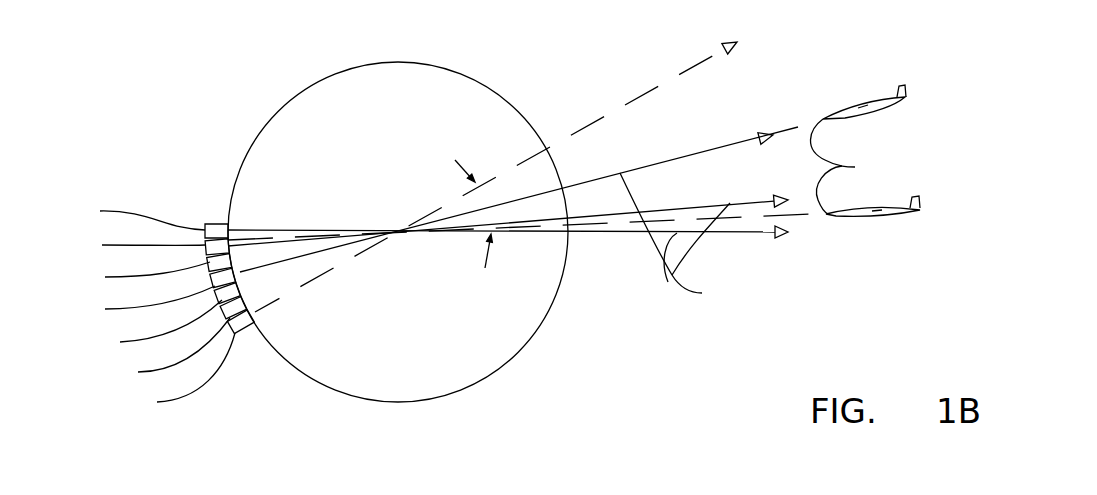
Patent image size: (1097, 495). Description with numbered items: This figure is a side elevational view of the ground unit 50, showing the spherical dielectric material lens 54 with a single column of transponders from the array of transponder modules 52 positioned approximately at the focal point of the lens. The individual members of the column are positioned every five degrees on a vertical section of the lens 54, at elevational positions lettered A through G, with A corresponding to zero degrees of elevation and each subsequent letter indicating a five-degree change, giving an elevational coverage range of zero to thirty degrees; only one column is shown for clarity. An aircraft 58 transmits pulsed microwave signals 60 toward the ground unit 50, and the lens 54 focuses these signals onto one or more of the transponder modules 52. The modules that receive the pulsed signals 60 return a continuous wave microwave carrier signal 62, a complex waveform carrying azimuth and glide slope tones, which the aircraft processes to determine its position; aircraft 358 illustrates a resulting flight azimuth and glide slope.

The ground unit 50 is at (519, 238).
The array of transponder modules 52 is at (216, 198).
The dielectric material lens 54 is at (371, 146).
The aircraft 58 is at (880, 97).
The pulsed microwave signals 60 is at (853, 166).
The continuous wave microwave carrier signal 62 is at (686, 242).
The aircraft 358 is at (888, 217).